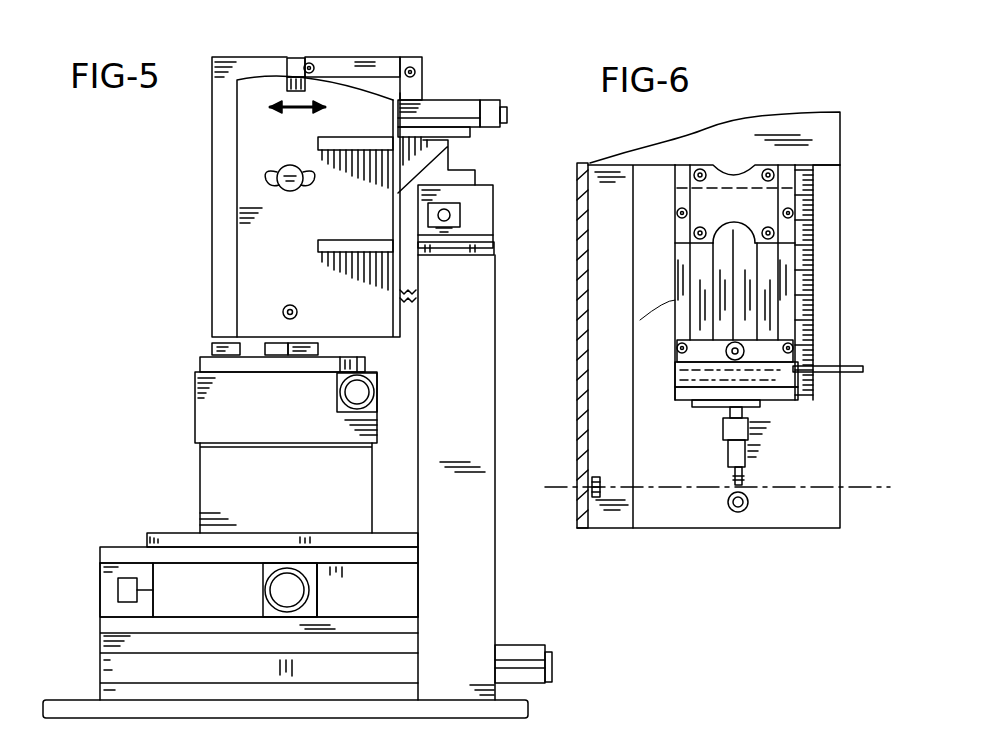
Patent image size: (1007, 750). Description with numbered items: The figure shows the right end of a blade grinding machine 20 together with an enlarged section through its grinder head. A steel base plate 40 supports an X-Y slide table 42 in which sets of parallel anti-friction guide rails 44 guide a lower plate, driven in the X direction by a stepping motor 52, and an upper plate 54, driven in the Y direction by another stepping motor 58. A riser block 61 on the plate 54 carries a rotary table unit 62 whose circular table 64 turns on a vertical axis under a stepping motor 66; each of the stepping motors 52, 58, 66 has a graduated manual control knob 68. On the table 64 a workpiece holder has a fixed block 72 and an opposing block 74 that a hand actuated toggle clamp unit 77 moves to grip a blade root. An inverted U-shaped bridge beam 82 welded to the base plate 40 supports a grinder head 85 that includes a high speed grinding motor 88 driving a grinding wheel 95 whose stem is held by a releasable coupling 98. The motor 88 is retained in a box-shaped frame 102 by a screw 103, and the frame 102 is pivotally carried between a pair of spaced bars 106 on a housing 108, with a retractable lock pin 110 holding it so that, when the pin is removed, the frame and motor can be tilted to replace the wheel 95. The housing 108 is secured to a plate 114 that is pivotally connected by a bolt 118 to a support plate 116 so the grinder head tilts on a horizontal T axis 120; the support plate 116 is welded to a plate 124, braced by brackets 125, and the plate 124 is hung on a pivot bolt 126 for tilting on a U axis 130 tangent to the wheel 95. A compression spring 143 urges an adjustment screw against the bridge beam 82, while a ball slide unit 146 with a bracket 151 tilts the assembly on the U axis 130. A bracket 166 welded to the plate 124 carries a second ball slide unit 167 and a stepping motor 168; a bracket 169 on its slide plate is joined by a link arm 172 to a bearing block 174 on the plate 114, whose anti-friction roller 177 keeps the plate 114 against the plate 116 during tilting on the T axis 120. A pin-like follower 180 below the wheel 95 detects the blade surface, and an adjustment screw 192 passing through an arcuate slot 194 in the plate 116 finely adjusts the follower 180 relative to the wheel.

In FIG. 5, the precision measuring apparatus 20 is at (504, 550).
In FIG. 5, the base plate 40 is at (72, 708).
In FIG. 5, the X-Y slide table 42 is at (100, 640).
In FIG. 5, the anti-friction guide rails 44 is at (105, 600).
In FIG. 5, the stepping motor 52 is at (530, 648).
In FIG. 5, the plate 54 is at (125, 540).
In FIG. 5, the stepping motor 58 is at (283, 590).
In FIG. 5, the riser block 61 is at (210, 470).
In FIG. 5, the rotary table unit 62 is at (195, 410).
In FIG. 5, the circular table 64 is at (204, 362).
In FIG. 5, the stepping motor 66 is at (375, 402).
In FIG. 5, the manual control knob 68 is at (378, 390).
In FIG. 5, the block 72 is at (305, 345).
In FIG. 5, the opposing block 74 is at (276, 355).
In FIG. 5, the toggle clamp unit 77 is at (212, 350).
In FIG. 5, the bridge beam 82 is at (495, 392).
In FIG. 6, the grinder head 85 is at (804, 287).
In FIG. 6, the grinding motor 88 is at (720, 262).
In FIG. 6, the grinding wheel 95 is at (745, 482).
In FIG. 6, the releasable coupling 98 is at (752, 430).
In FIG. 6, the frame 102 is at (712, 195).
In FIG. 6, the screw 103 is at (732, 358).
In FIG. 6, the spaced bars 106 is at (790, 232).
In FIG. 6, the housing 108 is at (833, 180).
In FIG. 6, the lock pin 110 is at (852, 364).
In FIG. 5, the plate 114 is at (213, 135).
In FIG. 6, the plate 114 is at (748, 130).
In FIG. 5, the support plate 116 is at (240, 212).
In FIG. 5, the bolt 118 is at (293, 305).
In FIG. 5, the T axis 120 is at (283, 310).
In FIG. 5, the plate 124 is at (405, 268).
In FIG. 6, the plate 124 is at (580, 415).
In FIG. 5, the brackets 125 is at (348, 240).
In FIG. 6, the pivot bolt 126 is at (600, 485).
In FIG. 6, the U axis 130 is at (872, 485).
In FIG. 5, the compression spring 143 is at (408, 300).
In FIG. 5, the ball slide unit 146 is at (468, 214).
In FIG. 5, the bracket 151 is at (440, 170).
In FIG. 5, the bracket 166 is at (476, 186).
In FIG. 5, the ball slide unit 167 is at (455, 98).
In FIG. 5, the stepping motor 168 is at (492, 106).
In FIG. 5, the bracket 169 is at (422, 90).
In FIG. 5, the link arm 172 is at (356, 60).
In FIG. 5, the bearing block 174 is at (297, 58).
In FIG. 5, the anti-friction roller 177 is at (288, 84).
In FIG. 6, the follower 180 is at (750, 502).
In FIG. 5, the adjustment screw 192 is at (293, 168).
In FIG. 5, the arcuate slot 194 is at (277, 183).